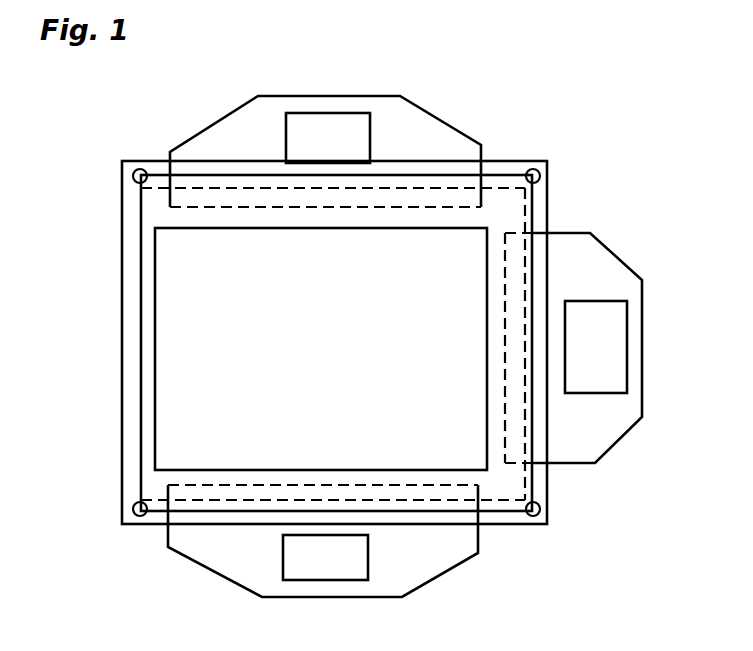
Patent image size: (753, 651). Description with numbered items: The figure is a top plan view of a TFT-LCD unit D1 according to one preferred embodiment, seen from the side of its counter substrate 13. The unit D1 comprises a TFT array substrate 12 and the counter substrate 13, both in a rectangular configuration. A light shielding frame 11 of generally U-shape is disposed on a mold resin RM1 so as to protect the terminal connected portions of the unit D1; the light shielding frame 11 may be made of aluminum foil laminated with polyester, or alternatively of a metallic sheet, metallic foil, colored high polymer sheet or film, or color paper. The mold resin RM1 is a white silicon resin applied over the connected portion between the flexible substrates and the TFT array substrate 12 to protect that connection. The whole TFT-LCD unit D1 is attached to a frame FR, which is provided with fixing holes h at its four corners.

The TFT-LCD unit D1 is at (541, 84).
The frame FR is at (513, 528).
The light shielding frame 11 is at (140, 482).
The TFT array substrate 12 is at (140, 310).
The counter substrate 13 is at (155, 367).
The fixing holes h is at (136, 171).
The mold resin RM1 is at (535, 211).